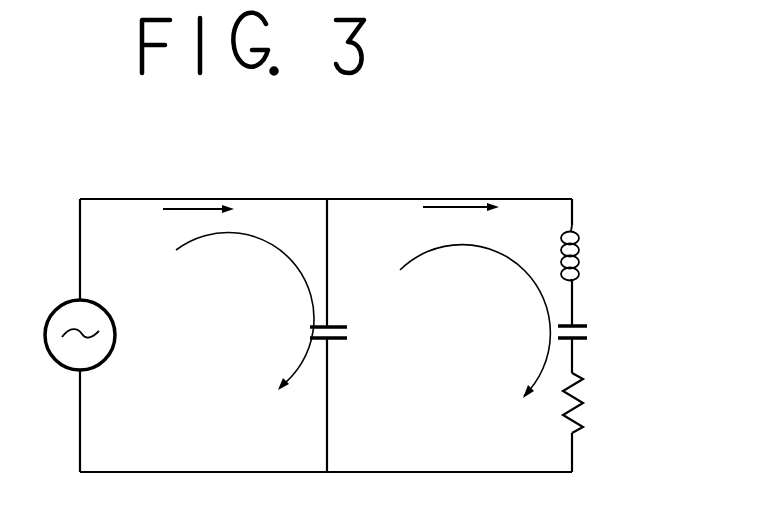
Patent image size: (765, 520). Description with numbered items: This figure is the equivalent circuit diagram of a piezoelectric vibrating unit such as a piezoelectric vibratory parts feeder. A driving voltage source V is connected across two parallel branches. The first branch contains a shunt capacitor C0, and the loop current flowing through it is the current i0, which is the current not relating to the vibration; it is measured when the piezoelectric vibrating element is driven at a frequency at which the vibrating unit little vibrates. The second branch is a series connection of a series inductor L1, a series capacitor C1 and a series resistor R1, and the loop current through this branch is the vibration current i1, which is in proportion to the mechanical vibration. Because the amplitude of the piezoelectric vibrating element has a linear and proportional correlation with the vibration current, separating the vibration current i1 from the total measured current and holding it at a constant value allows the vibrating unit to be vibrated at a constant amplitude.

The driving voltage source V is at (94, 335).
The current not relating to the vibration i0 is at (238, 297).
The shunt capacitor C0 is at (348, 334).
The vibration current i1 is at (475, 300).
The series inductor L1 is at (588, 253).
The series capacitor C1 is at (594, 336).
The series resistor R1 is at (596, 403).